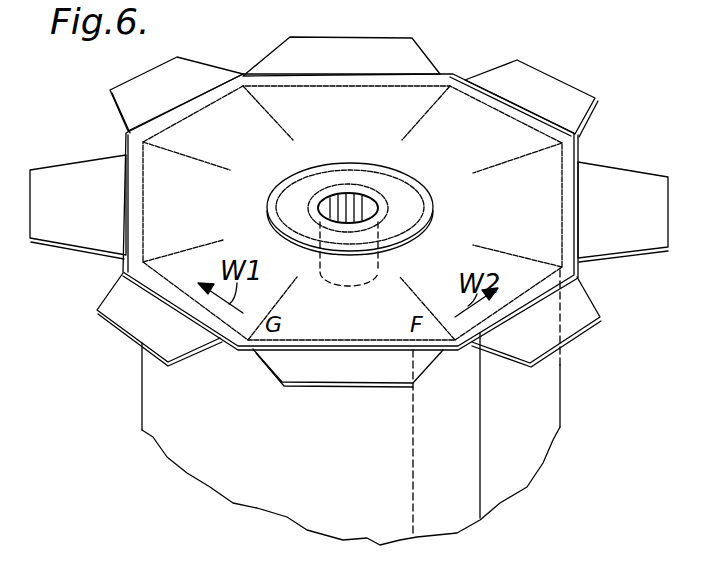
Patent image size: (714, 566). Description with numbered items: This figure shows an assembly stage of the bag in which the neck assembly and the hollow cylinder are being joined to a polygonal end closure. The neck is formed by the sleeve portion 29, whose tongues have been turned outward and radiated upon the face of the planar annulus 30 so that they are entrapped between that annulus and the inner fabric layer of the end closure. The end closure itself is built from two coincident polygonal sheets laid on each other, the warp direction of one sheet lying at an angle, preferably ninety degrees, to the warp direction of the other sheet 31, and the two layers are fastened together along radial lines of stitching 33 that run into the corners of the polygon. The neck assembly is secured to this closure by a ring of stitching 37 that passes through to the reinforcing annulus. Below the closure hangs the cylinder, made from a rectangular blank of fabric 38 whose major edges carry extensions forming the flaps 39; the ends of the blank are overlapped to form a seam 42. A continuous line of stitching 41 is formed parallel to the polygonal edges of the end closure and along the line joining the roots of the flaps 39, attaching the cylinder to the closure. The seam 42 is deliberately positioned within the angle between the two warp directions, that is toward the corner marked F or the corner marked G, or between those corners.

The sleeve portion 29 is at (378, 258).
The planar annulus 30 is at (285, 203).
The sheet 31 is at (486, 142).
The radial lines of stitching 33 is at (285, 131).
The ring of stitching 37 is at (378, 191).
The rectangular blank of fabric 38 is at (538, 398).
The flaps 39 is at (600, 183).
The continuous line of stitching 41 is at (563, 218).
The seam 42 is at (452, 495).